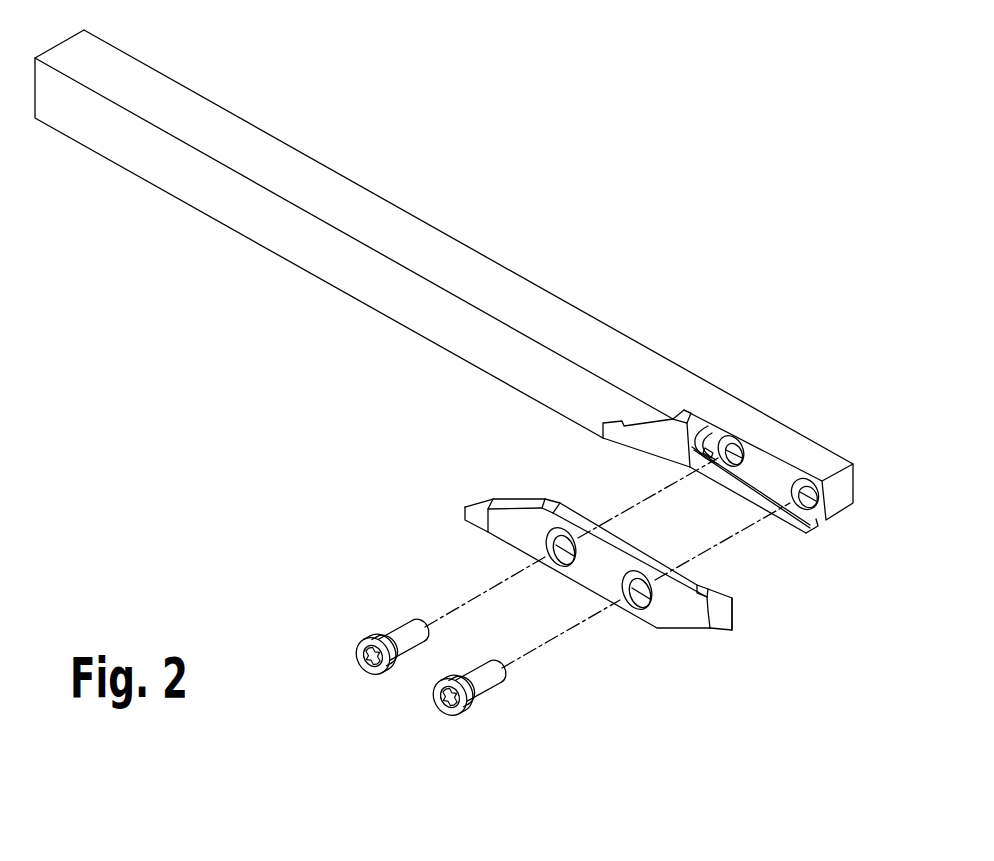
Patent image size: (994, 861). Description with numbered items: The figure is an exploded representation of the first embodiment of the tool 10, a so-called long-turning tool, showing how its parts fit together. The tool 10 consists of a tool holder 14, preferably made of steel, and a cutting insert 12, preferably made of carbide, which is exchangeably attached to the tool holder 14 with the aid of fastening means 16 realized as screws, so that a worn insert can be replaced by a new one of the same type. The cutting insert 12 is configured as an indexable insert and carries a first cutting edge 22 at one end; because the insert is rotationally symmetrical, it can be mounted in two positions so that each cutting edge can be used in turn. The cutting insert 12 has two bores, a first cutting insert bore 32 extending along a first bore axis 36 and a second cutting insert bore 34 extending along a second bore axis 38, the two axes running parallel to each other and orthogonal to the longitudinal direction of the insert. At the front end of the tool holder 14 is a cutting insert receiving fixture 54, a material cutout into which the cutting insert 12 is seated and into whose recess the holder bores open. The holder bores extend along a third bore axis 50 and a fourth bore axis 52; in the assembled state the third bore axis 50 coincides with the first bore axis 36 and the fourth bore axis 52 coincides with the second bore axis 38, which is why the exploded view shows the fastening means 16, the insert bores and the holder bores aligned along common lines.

The tool 10 is at (812, 288).
The cutting insert 12 is at (672, 655).
The tool holder 14 is at (590, 284).
The fastening means 16 is at (373, 636).
The first cutting edge 22 is at (737, 610).
The first cutting insert bore 32 is at (545, 536).
The second cutting insert bore 34 is at (637, 617).
The first bore axis 36 is at (617, 467).
The third bore axis 50 is at (637, 505).
The second bore axis 38 is at (800, 543).
The fourth bore axis 52 is at (725, 542).
The cutting insert receiving fixture 54 is at (681, 438).